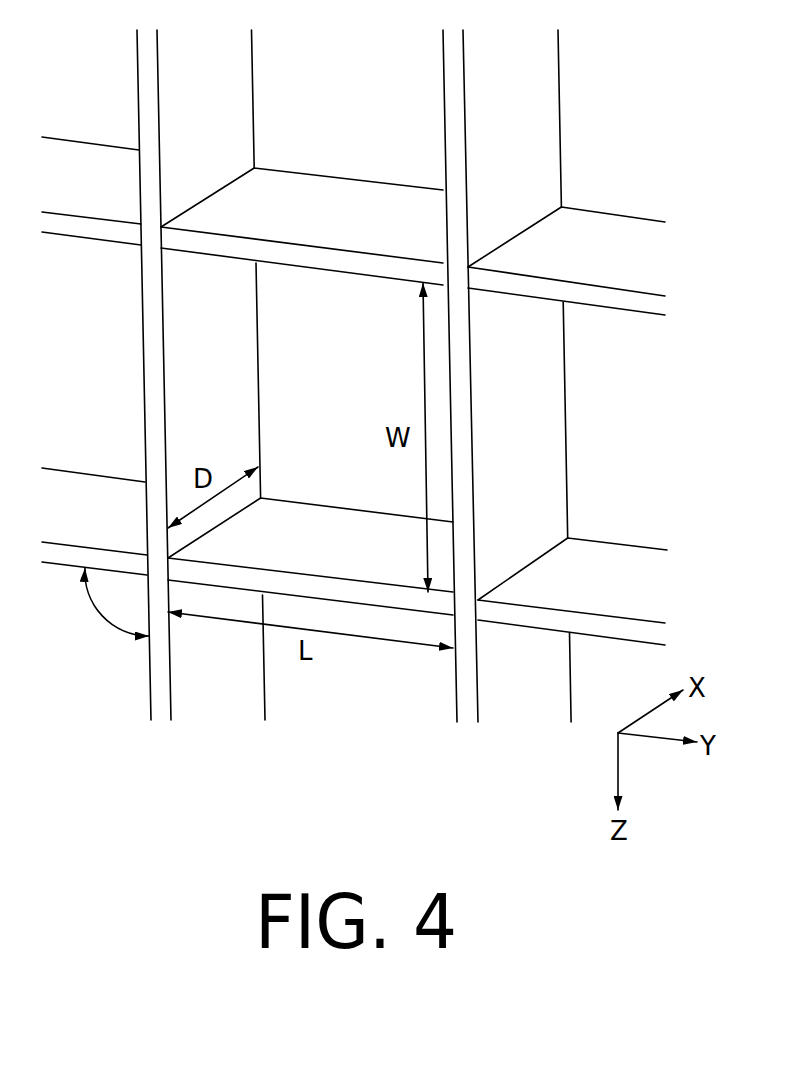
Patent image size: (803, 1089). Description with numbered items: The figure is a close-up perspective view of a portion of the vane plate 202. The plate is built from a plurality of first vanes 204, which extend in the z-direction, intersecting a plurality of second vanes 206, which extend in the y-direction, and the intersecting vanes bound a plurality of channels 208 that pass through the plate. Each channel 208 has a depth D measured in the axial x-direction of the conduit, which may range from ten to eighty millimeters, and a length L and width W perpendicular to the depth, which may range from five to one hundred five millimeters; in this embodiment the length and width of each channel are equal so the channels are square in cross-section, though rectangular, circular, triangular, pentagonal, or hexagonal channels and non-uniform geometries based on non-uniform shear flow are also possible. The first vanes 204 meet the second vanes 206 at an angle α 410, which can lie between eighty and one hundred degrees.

The vane plate 202 is at (562, 207).
The first vanes 204 is at (235, 103).
The second vanes 206 is at (93, 162).
The channels 208 is at (310, 353).
The angle α 410 is at (93, 618).